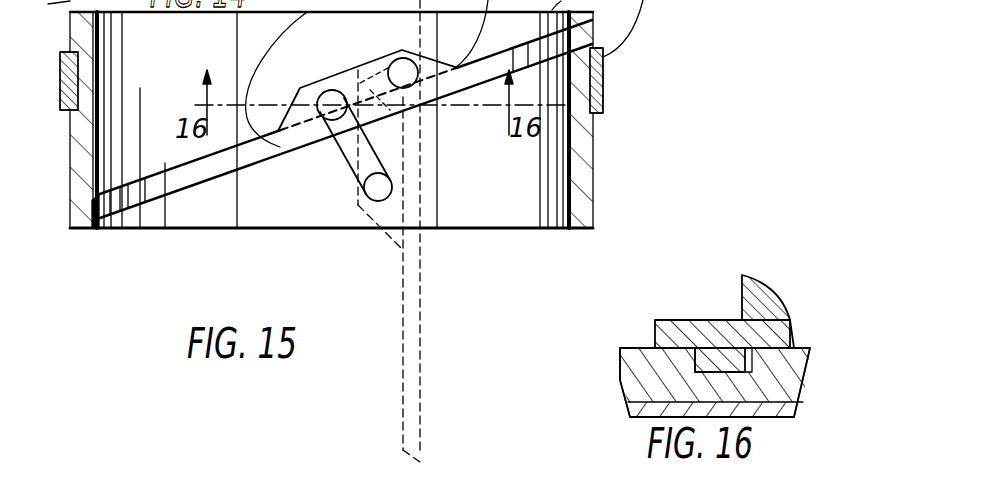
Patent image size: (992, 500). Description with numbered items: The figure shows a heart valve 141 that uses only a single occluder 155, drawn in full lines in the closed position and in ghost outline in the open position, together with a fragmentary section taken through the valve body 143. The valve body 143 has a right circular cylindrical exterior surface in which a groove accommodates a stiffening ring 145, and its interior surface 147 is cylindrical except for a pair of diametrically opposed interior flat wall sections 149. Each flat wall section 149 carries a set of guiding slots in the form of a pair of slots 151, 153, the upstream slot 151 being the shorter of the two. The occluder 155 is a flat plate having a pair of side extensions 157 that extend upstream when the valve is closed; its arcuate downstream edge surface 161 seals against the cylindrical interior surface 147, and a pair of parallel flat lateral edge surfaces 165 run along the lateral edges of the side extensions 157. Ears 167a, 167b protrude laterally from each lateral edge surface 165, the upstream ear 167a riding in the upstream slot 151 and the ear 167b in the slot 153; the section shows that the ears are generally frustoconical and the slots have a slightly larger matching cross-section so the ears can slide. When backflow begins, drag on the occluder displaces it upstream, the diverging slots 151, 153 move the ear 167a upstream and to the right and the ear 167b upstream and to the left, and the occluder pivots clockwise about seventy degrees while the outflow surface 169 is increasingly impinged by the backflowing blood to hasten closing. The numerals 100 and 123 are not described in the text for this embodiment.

In FIG. 15, the cam assembly 100 is at (597, 28).
In FIG. 15, the frame member 123 is at (43, 6).
In FIG. 15, the heart valve 141 is at (64, 39).
In FIG. 15, the valve body 143 is at (567, 163).
In FIG. 16, the stiffening ring 145 is at (648, 412).
In FIG. 15, the interior surface 147 is at (176, 59).
In FIG. 15, the interior flat wall sections 149 is at (278, 37).
In FIG. 15, the upstream slot 151 is at (388, 122).
In FIG. 16, the upstream slot 151 is at (803, 350).
In FIG. 15, the downstream slot 153 is at (342, 170).
In FIG. 15, the occluder 155 is at (400, 330).
In FIG. 16, the occluder 155 is at (745, 280).
In FIG. 16, the side extensions 157 is at (670, 320).
In FIG. 15, the arcuate downstream edge surface 161 is at (146, 205).
In FIG. 15, the flat lateral edge surfaces 165 is at (237, 85).
In FIG. 15, the upstream ear 167a is at (400, 48).
In FIG. 15, the downstream ear 167b is at (308, 148).
In FIG. 16, the downstream ear 167b is at (626, 349).
In FIG. 15, the outflow surface 169 is at (199, 196).